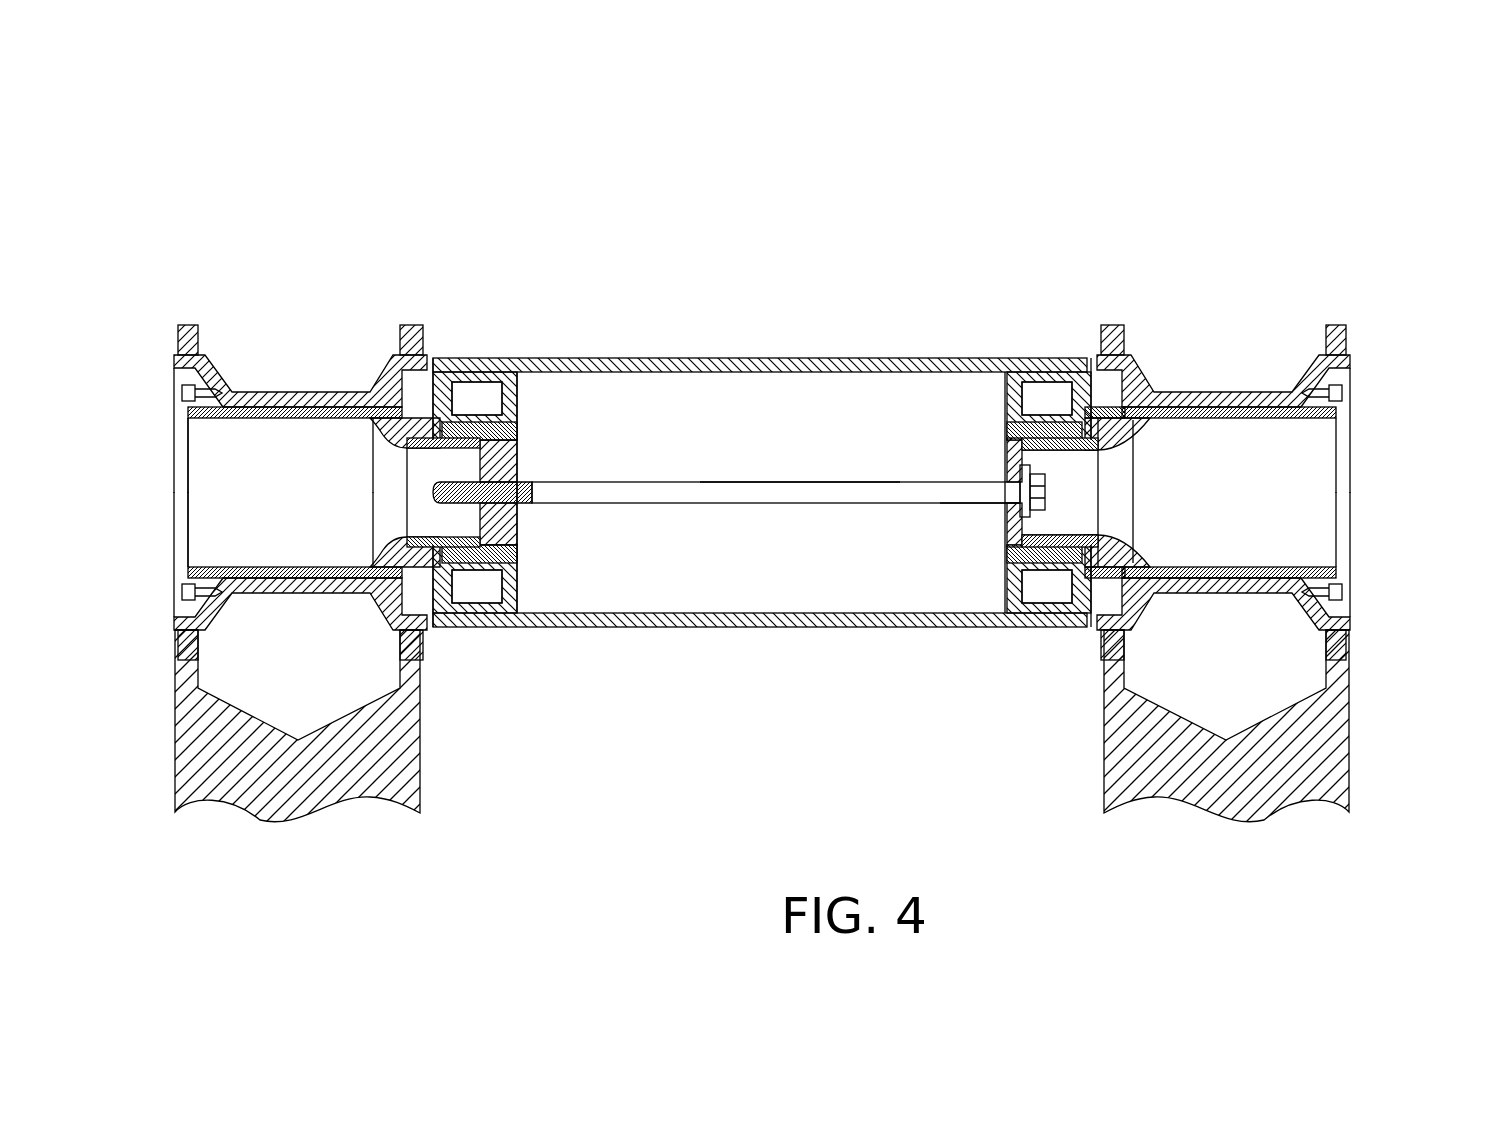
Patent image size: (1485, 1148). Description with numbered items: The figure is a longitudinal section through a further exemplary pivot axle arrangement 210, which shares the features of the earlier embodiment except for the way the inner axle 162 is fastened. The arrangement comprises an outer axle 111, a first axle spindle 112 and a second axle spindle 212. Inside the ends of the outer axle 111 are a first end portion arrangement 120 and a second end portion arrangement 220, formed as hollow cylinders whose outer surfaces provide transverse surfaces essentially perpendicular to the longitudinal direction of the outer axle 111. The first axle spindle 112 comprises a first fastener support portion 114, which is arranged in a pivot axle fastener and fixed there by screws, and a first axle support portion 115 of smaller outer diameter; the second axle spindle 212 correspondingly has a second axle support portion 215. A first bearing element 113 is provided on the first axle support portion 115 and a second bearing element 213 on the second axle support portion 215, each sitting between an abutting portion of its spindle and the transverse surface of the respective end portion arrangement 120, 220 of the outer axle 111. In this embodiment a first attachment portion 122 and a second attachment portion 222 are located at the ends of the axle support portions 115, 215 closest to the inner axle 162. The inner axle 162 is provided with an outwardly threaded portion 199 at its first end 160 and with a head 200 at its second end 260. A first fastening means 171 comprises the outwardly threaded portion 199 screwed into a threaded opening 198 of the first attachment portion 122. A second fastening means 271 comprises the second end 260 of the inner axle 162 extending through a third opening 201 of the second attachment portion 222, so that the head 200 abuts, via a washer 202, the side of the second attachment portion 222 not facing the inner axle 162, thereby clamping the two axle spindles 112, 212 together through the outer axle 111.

The outer axle 111 is at (735, 620).
The first axle spindle 112 is at (432, 372).
The first bearing element 113 is at (445, 615).
The first fastener support portion 114 is at (320, 392).
The first axle support portion 115 is at (512, 440).
The first end portion arrangement 120 is at (490, 595).
The first attachment portion 122 is at (520, 448).
The first end 160 is at (565, 490).
The inner axle 162 is at (822, 490).
The first fastening means 171 is at (450, 472).
The threaded opening 198 is at (526, 521).
The outwardly threaded portion 199 is at (545, 503).
The head 200 is at (1047, 497).
The third opening 201 is at (996, 524).
The washer 202 is at (1030, 510).
The pivot axle arrangement 210 is at (980, 167).
The second axle spindle 212 is at (1133, 420).
The second bearing element 213 is at (1010, 560).
The second axle support portion 215 is at (1000, 545).
The second end portion arrangement 220 is at (1050, 595).
The second attachment portion 222 is at (1012, 448).
The second end 260 is at (1003, 470).
The second fastening means 271 is at (1075, 483).